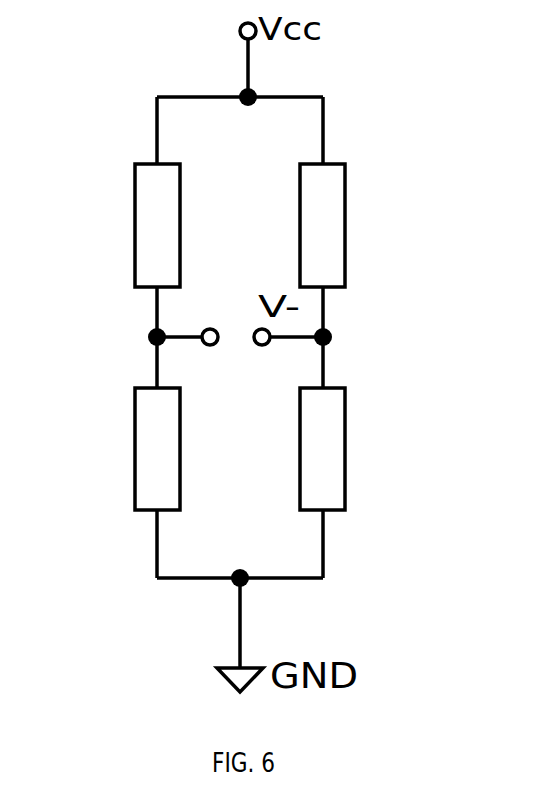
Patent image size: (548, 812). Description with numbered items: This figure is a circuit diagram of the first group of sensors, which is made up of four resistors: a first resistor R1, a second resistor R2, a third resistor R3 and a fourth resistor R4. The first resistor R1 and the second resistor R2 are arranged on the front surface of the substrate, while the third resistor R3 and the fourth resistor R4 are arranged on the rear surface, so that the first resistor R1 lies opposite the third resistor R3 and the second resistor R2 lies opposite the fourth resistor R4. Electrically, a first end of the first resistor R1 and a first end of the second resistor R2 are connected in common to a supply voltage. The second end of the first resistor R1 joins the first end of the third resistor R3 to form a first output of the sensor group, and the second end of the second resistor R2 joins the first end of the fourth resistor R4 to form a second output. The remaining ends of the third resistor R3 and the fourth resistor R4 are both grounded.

The first resistor R1 is at (116, 225).
The second resistor R2 is at (370, 225).
The third resistor R3 is at (116, 449).
The fourth resistor R4 is at (369, 449).